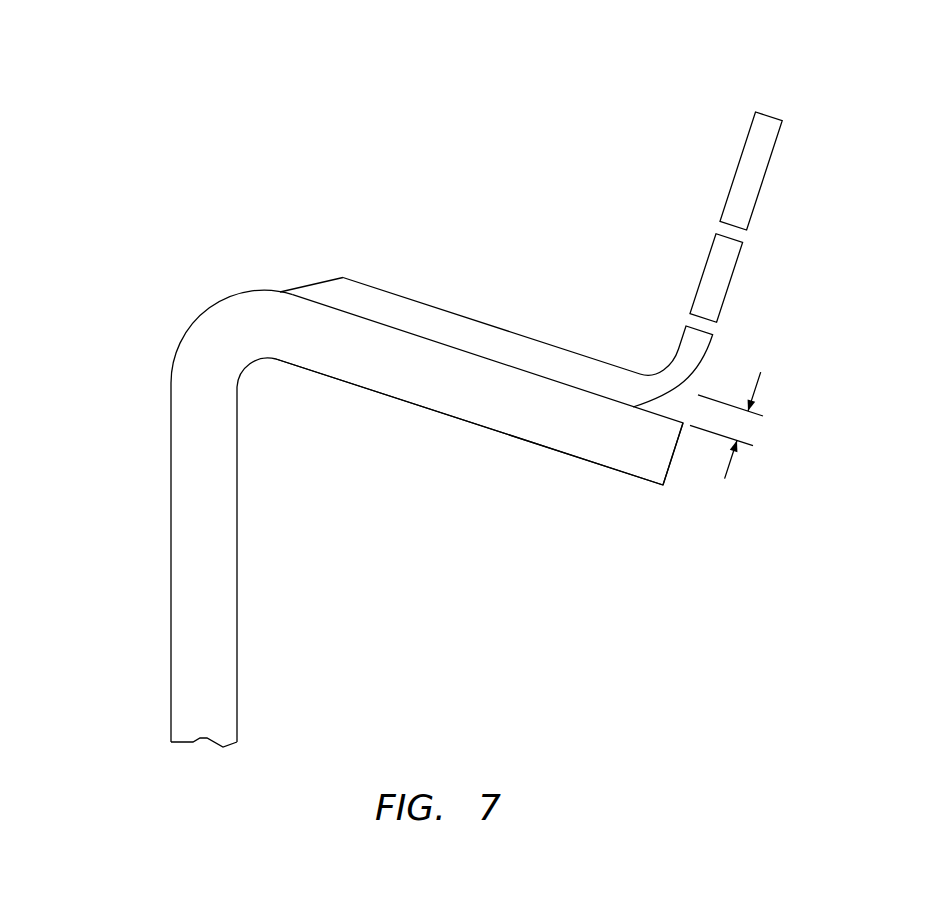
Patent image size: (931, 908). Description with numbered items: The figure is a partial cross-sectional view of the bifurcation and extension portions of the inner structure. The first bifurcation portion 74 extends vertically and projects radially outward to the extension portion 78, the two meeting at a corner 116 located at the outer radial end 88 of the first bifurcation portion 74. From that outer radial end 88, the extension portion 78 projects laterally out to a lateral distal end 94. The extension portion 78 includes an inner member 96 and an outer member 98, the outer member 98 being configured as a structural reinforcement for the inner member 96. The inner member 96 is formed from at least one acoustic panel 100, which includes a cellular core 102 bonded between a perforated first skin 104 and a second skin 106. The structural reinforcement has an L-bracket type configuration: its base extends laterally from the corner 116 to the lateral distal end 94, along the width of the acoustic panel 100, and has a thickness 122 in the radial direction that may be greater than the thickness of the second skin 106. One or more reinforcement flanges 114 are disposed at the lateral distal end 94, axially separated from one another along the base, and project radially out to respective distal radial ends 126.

The first bifurcation portion 74 is at (148, 602).
The extension portion 78 is at (479, 429).
The outer radial end 88 is at (184, 338).
The lateral distal end 94 is at (670, 469).
The inner member 96 is at (479, 404).
The outer member 98 is at (528, 318).
The acoustic panel 100 is at (460, 429).
The cellular core 102 is at (450, 301).
The perforated first skin 104 is at (383, 394).
The second skin 106 is at (370, 319).
The reinforcement flanges 114 is at (709, 172).
The corner 116 is at (200, 323).
The thickness 122 is at (757, 383).
The distal radial ends 126 is at (772, 116).